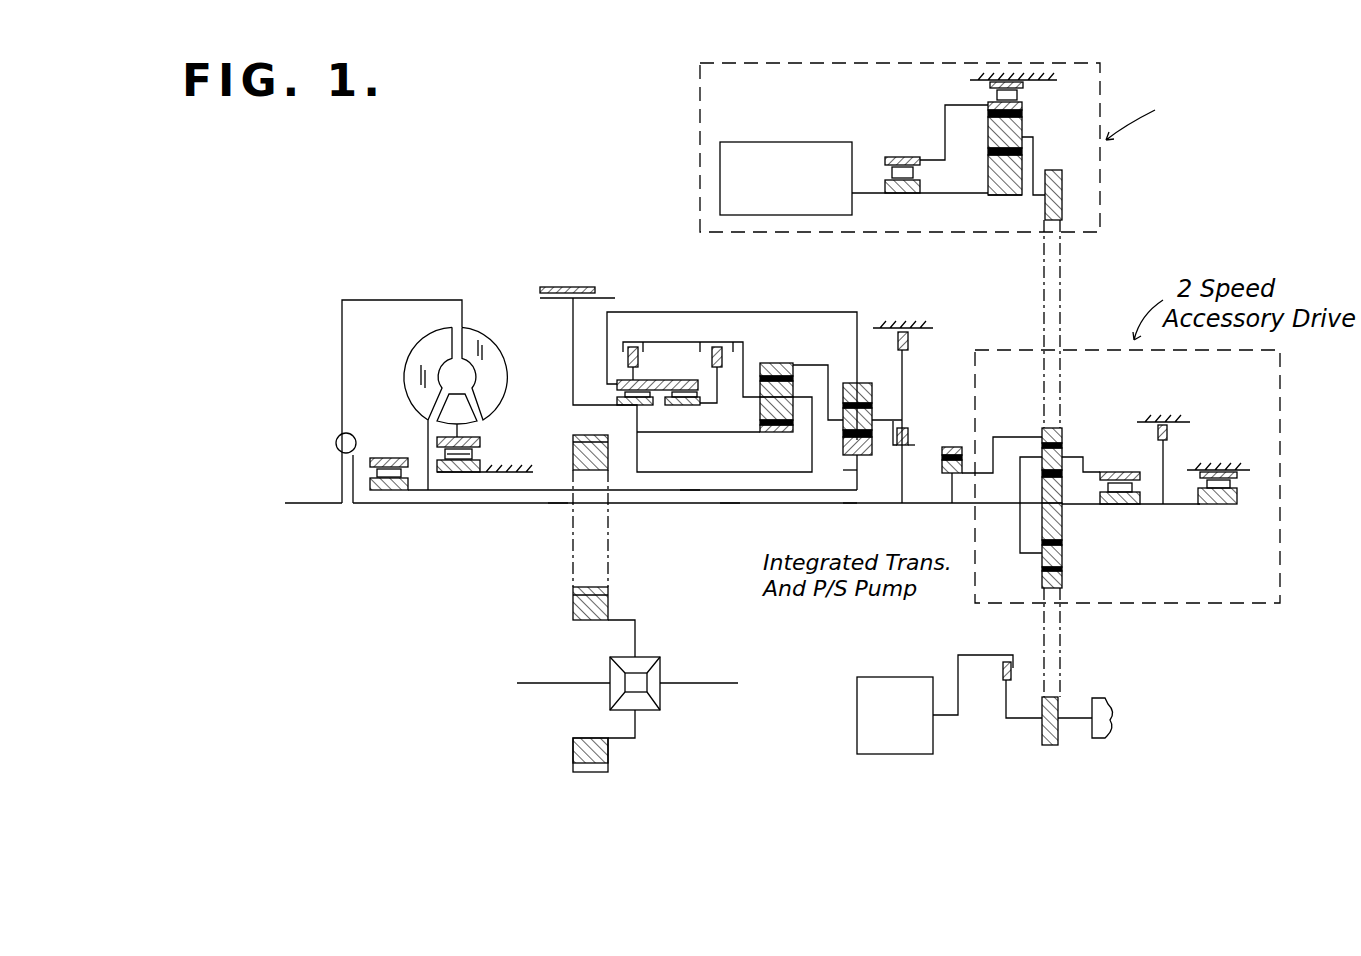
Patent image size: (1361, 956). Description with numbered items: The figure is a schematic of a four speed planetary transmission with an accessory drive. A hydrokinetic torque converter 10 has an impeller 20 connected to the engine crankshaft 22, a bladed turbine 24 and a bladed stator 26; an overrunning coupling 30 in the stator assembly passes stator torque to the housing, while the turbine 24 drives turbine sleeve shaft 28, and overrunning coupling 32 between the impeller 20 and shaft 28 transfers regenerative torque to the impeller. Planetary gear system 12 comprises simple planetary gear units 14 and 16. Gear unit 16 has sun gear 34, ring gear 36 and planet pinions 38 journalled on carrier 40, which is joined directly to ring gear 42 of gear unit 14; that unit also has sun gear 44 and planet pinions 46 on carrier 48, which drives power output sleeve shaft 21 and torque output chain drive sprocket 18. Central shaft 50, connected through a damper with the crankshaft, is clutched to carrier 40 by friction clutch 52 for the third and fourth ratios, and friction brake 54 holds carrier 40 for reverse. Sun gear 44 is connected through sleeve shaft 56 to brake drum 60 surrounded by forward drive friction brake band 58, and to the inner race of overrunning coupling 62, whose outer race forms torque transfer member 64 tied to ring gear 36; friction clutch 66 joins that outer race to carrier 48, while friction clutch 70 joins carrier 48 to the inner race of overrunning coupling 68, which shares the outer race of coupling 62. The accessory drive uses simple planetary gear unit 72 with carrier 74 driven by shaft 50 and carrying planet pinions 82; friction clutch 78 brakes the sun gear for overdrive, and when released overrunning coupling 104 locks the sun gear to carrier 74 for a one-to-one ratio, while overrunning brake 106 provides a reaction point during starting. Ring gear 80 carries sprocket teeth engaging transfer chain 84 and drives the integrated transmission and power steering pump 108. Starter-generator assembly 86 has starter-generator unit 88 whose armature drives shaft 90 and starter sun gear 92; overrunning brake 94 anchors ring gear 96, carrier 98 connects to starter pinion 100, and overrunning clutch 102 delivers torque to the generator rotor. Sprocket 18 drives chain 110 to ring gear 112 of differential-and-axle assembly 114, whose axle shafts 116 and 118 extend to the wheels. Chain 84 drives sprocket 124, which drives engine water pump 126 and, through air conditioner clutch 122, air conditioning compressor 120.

The hydrokinetic torque converter 10 is at (448, 376).
The planetary gear system 12 is at (839, 365).
The simple planetary gear unit 14 is at (746, 376).
The simple planetary gear unit 16 is at (856, 388).
The torque output chain drive sprocket 18 is at (578, 452).
The impeller 20 is at (498, 353).
The power output sleeve shaft 21 is at (688, 491).
The engine crankshaft 22 is at (298, 505).
The bladed turbine 24 is at (420, 357).
The bladed stator 26 is at (481, 421).
The turbine sleeve shaft 28 is at (556, 505).
The overrunning coupling 30 is at (463, 473).
The overrunning coupling 32 is at (392, 491).
The sun gear 34 is at (848, 505).
The ring gear 36 is at (843, 437).
The planet pinions 38 is at (845, 470).
The carrier 40 is at (906, 428).
The ring gear 42 is at (763, 393).
The sun gear 44 is at (782, 433).
The planet pinions 46 is at (795, 369).
The carrier 48 is at (752, 390).
The central shaft 50 is at (732, 505).
The friction clutch 52 is at (915, 446).
The friction brake 54 is at (906, 328).
The sleeve shaft 56 is at (700, 433).
The forward drive friction brake band 58 is at (587, 287).
The brake drum 60 is at (612, 297).
The overrunning coupling 62 is at (623, 394).
The torque transfer member 64 is at (656, 312).
The friction clutch 66 is at (627, 351).
The overrunning coupling 68 is at (681, 408).
The friction clutch 70 is at (711, 356).
The simple planetary gear unit 72 is at (1074, 473).
The carrier 74 is at (1033, 460).
The friction clutch 78 is at (1166, 422).
The ring gear 80 is at (1062, 430).
The planet pinions 82 is at (1063, 558).
The transfer chain 84 is at (1064, 258).
The starter-generator assembly 86 is at (1113, 94).
The starter-generator unit 88 is at (792, 142).
The shaft 90 is at (985, 198).
The starter sun gear 92 is at (1010, 197).
The overrunning brake 94 is at (1020, 79).
The ring gear 96 is at (990, 95).
The carrier 98 is at (1034, 148).
The starter pinion 100 is at (1064, 185).
The overrunning clutch 102 is at (900, 194).
The overrunning coupling 104 is at (1133, 500).
The overrunning brake 106 is at (1237, 483).
The integrated transmission and power steering pump 108 is at (958, 466).
The chain 110 is at (610, 542).
The ring gear 112 is at (573, 750).
The differential-and-axle assembly 114 is at (662, 658).
The axle shaft 116 is at (722, 683).
The axle shaft 118 is at (547, 683).
The air conditioning compressor 120 is at (857, 712).
The air conditioner clutch 122 is at (1005, 682).
The sprocket 124 is at (1060, 712).
The engine water pump 126 is at (1106, 740).